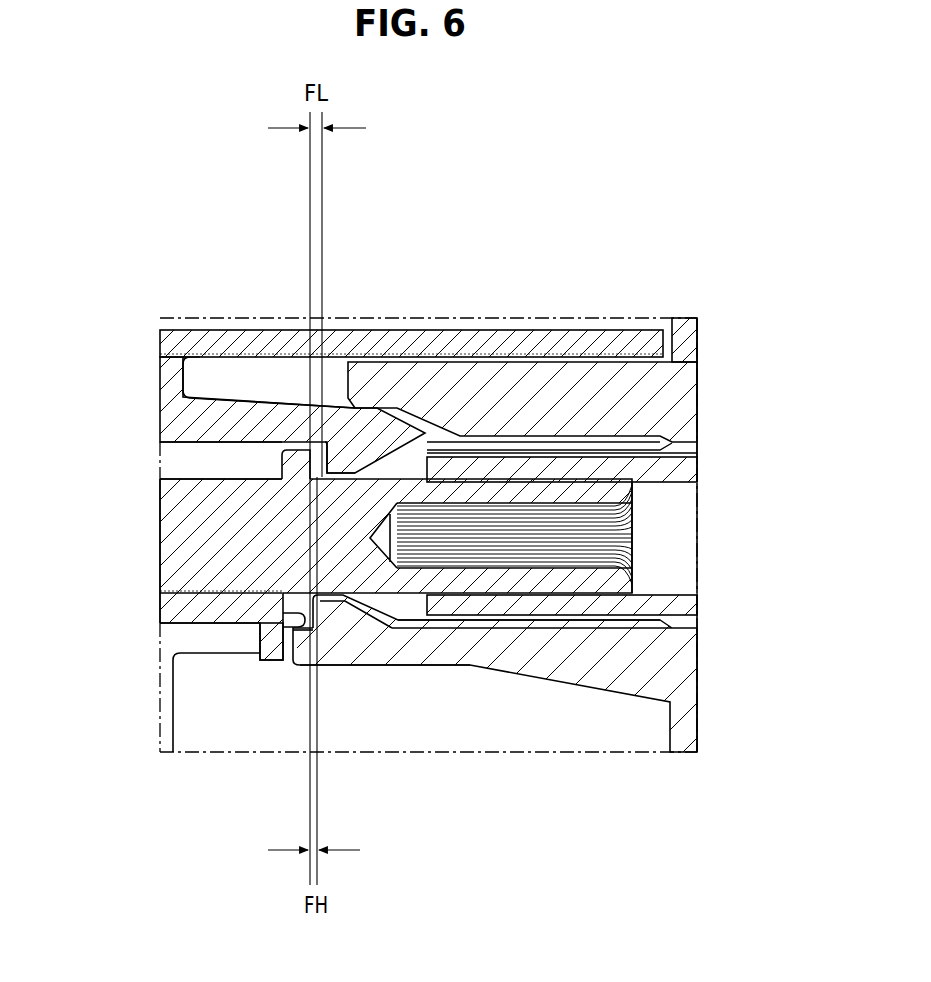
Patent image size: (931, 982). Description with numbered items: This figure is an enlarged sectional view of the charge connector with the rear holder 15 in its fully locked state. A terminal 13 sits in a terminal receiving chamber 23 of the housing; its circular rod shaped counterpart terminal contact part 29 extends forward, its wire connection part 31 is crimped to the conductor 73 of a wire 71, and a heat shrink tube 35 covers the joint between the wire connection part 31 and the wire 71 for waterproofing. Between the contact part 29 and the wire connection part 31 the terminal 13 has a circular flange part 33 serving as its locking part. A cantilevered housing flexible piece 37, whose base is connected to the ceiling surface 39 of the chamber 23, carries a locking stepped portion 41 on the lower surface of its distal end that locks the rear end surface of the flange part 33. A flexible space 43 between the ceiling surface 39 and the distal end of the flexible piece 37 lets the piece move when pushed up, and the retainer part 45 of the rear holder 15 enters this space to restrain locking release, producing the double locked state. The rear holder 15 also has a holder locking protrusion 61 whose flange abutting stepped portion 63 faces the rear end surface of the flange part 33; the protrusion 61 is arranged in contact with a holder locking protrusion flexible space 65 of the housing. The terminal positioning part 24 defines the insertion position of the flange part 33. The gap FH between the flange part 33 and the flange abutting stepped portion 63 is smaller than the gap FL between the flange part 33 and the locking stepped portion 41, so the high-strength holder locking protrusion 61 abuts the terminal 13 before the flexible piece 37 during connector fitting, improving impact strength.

The terminal 13 is at (158, 546).
The rear holder 15 is at (708, 343).
The terminal receiving chamber 23 is at (180, 459).
The terminal positioning part 24 is at (293, 662).
The counterpart terminal contact part 29 is at (196, 571).
The wire connection part 31 is at (598, 550).
The flange part 33 is at (290, 443).
The heat shrink tube 35 is at (683, 472).
The housing flexible piece 37 is at (200, 423).
The ceiling surface 39 is at (185, 364).
The locking stepped portion 41 is at (337, 490).
The flexible space 43 is at (232, 380).
The retainer part 45 is at (556, 380).
The holder locking protrusion 61 is at (374, 668).
The flange abutting stepped portion 63 is at (262, 628).
The holder locking protrusion flexible space 65 is at (427, 698).
The wire 71 is at (680, 567).
The conductor 73 is at (477, 545).